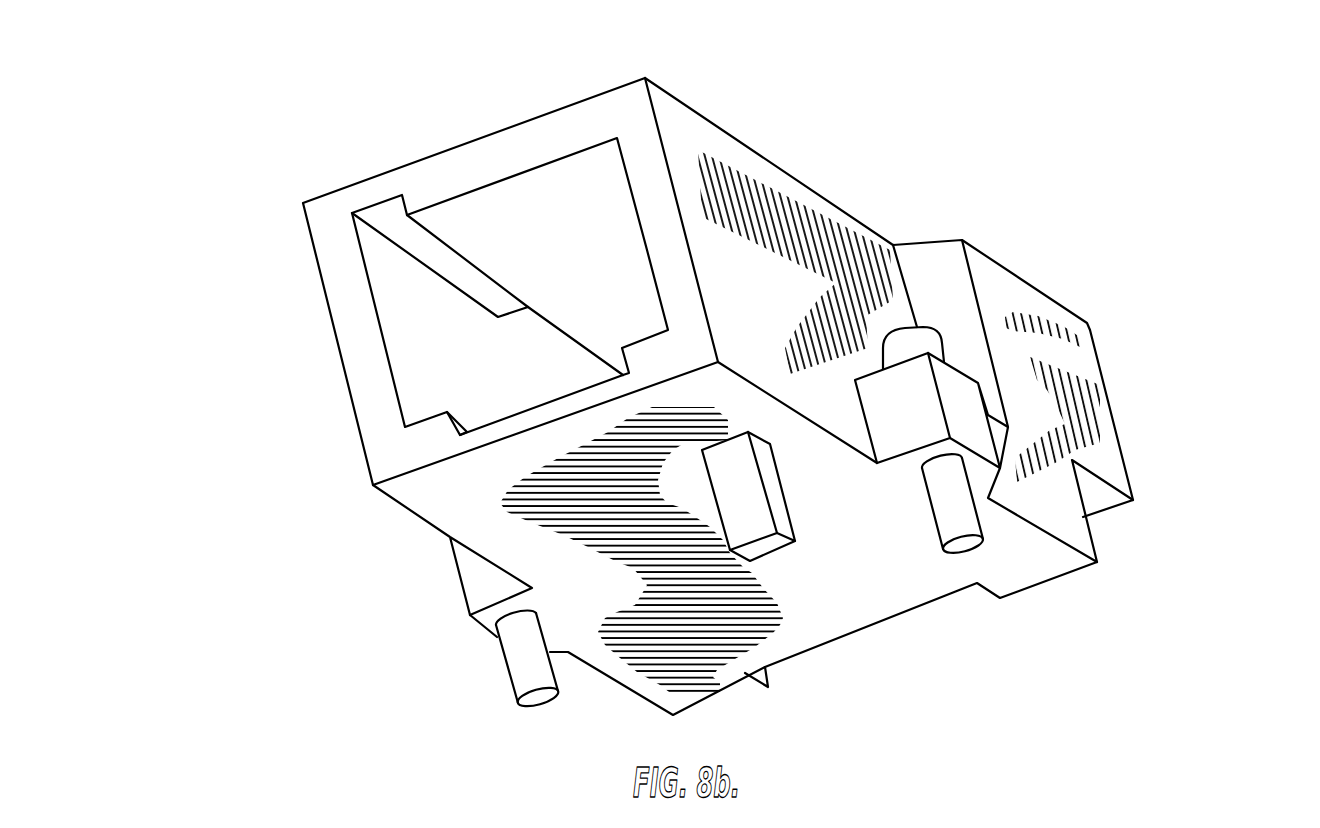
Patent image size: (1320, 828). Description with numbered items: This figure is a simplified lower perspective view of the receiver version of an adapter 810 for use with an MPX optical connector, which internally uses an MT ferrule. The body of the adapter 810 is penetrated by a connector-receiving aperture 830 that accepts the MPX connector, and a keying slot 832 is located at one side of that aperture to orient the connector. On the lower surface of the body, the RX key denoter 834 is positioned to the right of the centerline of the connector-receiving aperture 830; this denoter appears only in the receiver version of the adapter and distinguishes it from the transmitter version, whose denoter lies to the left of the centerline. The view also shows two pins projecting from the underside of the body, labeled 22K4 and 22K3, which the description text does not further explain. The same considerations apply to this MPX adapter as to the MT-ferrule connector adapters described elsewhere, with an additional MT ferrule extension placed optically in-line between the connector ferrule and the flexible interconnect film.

The RX adapter 810 is at (840, 103).
The connector-receiving aperture 830 is at (412, 313).
The keying slot 832 is at (400, 221).
The RX key denoter 834 is at (760, 547).
The alignment pin 22K4 is at (503, 673).
The alignment pin 22K3 is at (957, 493).